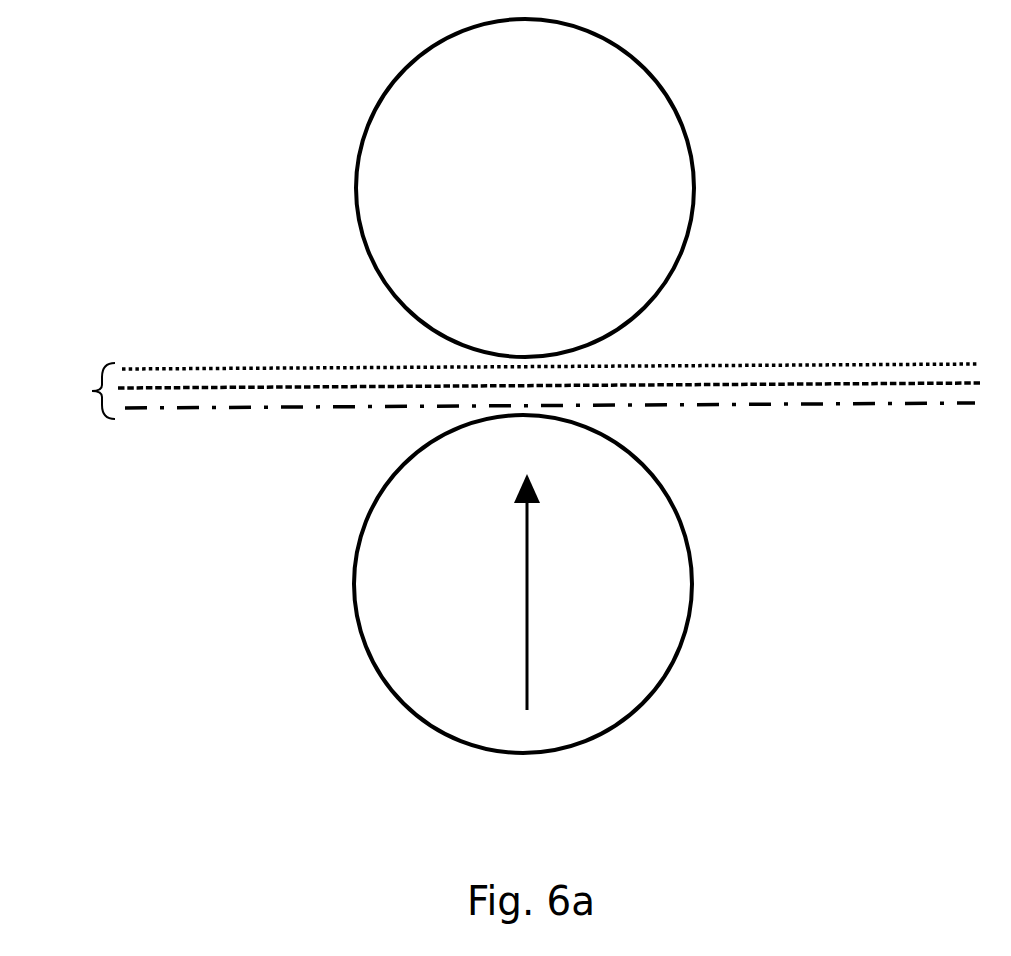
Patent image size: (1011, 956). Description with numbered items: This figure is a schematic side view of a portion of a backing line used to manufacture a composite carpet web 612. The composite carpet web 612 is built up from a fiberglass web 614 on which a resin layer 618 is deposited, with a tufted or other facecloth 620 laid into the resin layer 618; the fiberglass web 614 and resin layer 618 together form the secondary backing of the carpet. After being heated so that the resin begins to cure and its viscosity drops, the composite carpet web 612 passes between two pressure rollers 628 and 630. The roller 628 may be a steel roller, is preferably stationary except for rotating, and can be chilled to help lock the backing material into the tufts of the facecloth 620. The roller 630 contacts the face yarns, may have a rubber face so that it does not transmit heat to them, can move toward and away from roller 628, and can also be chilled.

The composite carpet web 612 is at (92, 391).
The fiberglass web 614 is at (287, 368).
The resin layer 618 is at (220, 385).
The facecloth 620 is at (333, 405).
The roller 628 is at (525, 188).
The roller 630 is at (523, 584).